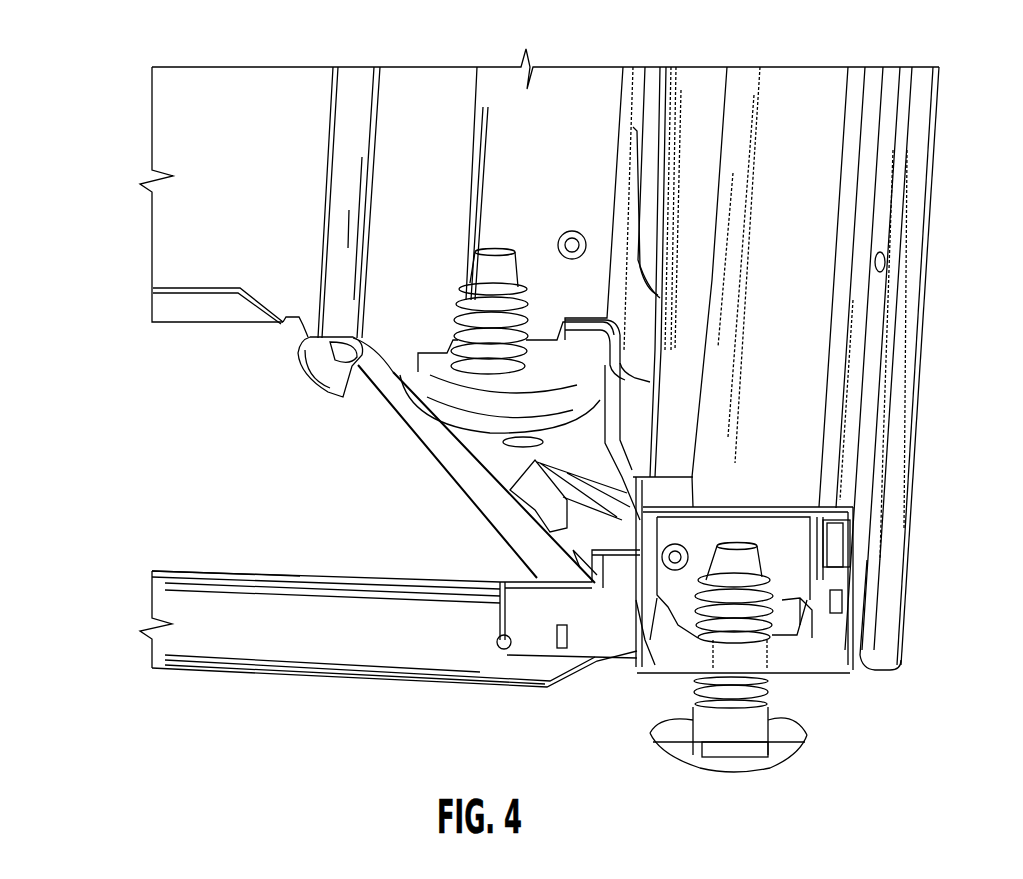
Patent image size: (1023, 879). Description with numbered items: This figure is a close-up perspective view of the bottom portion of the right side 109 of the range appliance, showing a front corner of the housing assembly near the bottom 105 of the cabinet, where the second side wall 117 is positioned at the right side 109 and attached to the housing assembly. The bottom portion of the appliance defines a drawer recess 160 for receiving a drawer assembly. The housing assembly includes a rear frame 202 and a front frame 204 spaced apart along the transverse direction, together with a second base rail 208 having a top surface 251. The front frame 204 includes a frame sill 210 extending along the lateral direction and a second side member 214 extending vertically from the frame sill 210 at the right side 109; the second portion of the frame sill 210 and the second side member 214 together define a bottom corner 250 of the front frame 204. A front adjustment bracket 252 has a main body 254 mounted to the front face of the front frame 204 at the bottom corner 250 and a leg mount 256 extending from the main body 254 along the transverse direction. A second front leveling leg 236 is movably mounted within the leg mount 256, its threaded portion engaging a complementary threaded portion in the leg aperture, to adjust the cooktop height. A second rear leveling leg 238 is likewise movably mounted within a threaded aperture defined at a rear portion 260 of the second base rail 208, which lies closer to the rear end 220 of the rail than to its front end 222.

The bottom 105 is at (258, 712).
The right side 109 is at (945, 163).
The second side wall 117 is at (935, 215).
The drawer recess 160 is at (160, 512).
The rear frame 202 is at (415, 85).
The front frame 204 is at (855, 415).
The second base rail 208 is at (452, 468).
The frame sill 210 is at (412, 655).
The second side member 214 is at (693, 130).
The rear end 220 is at (285, 348).
The front end 222 is at (543, 566).
The second front leveling leg 236 is at (752, 723).
The second rear leveling leg 238 is at (482, 318).
The bottom corner 250 is at (815, 592).
The top surface 251 is at (488, 452).
The front adjustment bracket 252 is at (650, 647).
The main body 254 is at (767, 530).
The leg mount 256 is at (663, 660).
The rear portion 260 is at (400, 388).